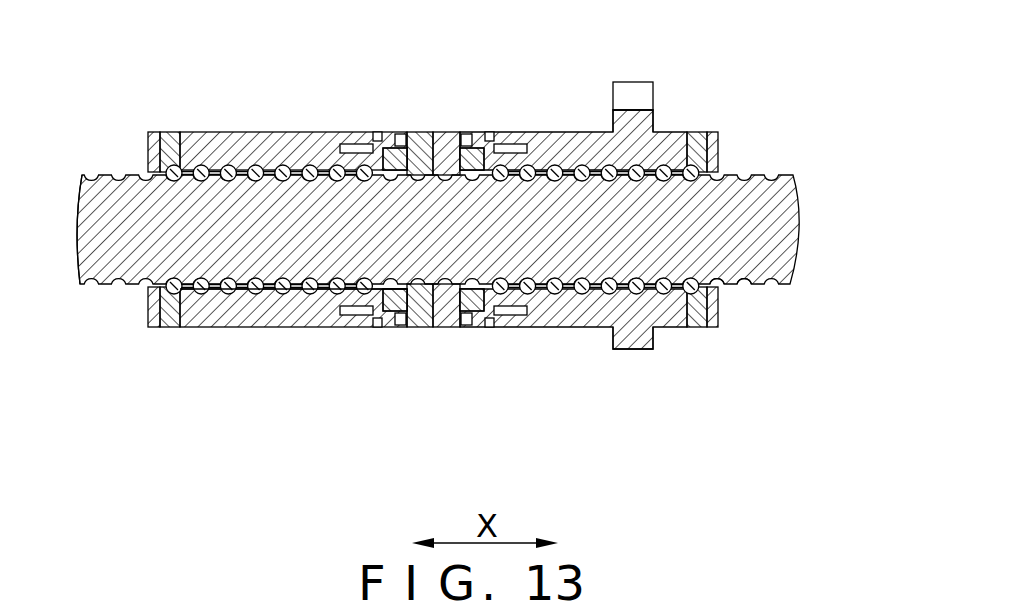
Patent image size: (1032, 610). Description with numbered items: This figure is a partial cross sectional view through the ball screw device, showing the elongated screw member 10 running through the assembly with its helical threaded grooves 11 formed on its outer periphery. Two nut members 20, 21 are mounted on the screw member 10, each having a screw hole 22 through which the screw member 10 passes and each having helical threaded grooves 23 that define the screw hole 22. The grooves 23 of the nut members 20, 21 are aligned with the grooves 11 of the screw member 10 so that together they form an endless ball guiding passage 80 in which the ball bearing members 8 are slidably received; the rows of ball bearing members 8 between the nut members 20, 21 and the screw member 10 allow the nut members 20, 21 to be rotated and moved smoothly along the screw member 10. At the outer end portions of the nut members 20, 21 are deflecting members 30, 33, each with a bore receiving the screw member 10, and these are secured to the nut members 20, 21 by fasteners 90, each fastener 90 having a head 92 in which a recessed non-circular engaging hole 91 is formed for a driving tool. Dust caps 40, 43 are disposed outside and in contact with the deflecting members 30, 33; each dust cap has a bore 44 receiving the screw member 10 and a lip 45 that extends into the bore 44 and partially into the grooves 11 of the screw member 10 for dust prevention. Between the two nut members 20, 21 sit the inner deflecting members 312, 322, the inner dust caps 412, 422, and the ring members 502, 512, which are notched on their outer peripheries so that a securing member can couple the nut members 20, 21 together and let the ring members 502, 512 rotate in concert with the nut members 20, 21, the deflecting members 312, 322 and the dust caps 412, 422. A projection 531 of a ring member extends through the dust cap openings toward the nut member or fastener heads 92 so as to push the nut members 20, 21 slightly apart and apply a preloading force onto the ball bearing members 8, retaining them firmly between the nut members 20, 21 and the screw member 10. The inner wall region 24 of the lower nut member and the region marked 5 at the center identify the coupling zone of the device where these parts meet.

The spacer 5 is at (428, 340).
The ball bearing members 8 is at (243, 300).
The screw member 10 is at (788, 233).
The helical threaded grooves 11 is at (81, 174).
The nut member 20 is at (307, 132).
The nut member 21 is at (628, 120).
The screw hole 22 is at (240, 160).
The helical threaded grooves 23 is at (555, 165).
The nut inner surface 24 is at (192, 313).
The deflecting member 30 is at (156, 132).
The deflecting member 33 is at (694, 328).
The dust cap 40 is at (152, 303).
The dust cap 43 is at (711, 327).
The bore 44 is at (720, 178).
The lip 45 is at (722, 283).
The endless ball guiding passage 80 is at (195, 162).
The fastener 90 is at (345, 300).
The engaging hole 91 is at (380, 313).
The head 92 is at (477, 318).
The deflecting member 312 is at (365, 322).
The deflecting member 322 is at (512, 325).
The dust cap 412 is at (395, 322).
The dust cap 422 is at (465, 132).
The ring member 502 is at (420, 327).
The ring member 512 is at (445, 315).
The projection 531 is at (476, 140).